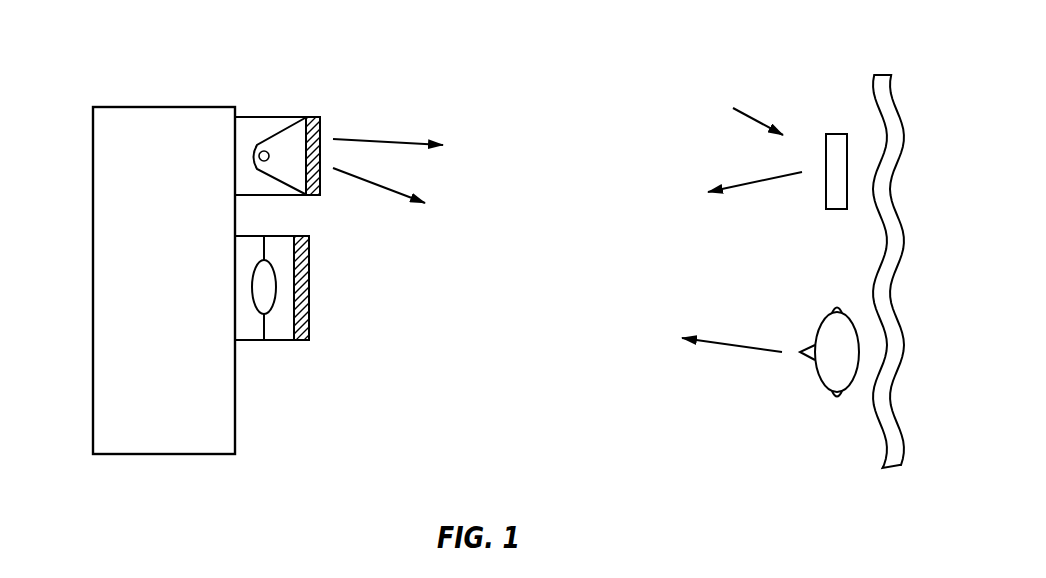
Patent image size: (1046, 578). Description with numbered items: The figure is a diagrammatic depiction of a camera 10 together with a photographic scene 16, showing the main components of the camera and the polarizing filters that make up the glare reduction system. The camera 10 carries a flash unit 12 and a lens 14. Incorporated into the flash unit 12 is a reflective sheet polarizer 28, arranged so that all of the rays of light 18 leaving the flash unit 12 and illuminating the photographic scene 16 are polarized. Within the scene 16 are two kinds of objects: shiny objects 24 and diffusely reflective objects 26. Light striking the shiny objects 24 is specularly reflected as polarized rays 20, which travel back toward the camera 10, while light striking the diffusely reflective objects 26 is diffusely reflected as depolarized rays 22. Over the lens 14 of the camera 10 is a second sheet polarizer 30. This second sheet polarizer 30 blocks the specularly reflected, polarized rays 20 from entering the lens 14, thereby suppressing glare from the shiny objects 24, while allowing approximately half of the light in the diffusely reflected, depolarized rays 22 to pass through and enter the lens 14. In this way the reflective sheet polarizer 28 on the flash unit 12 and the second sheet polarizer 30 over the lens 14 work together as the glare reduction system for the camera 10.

The camera 10 is at (130, 85).
The flash unit 12 is at (252, 115).
The lens 14 is at (263, 340).
The photographic scene 16 is at (741, 115).
The rays of light 18 is at (388, 140).
The specularly reflected rays 20 is at (760, 182).
The diffusely reflected rays 22 is at (742, 350).
The shiny object 24 is at (835, 133).
The diffusely reflective object 26 is at (818, 323).
The reflective sheet polarizer 28 is at (313, 115).
The second sheet polarizer 30 is at (306, 340).